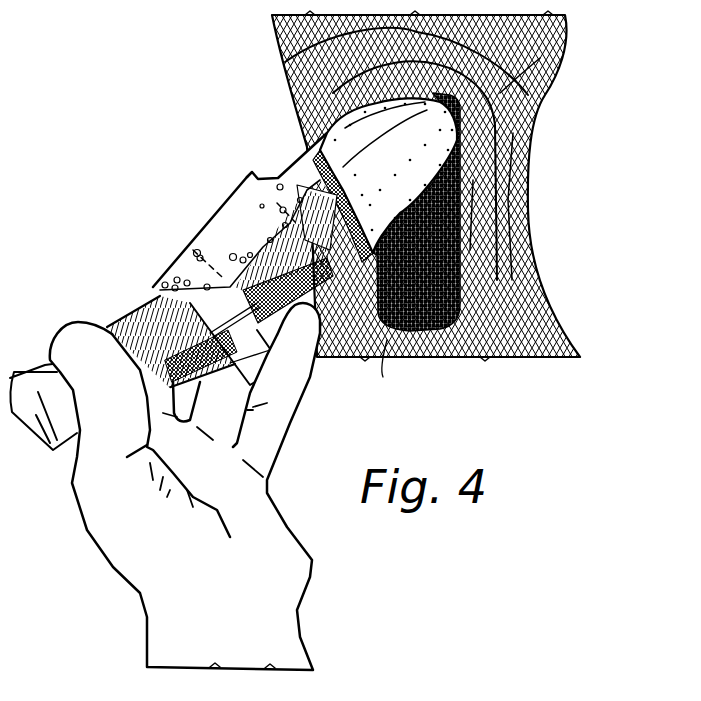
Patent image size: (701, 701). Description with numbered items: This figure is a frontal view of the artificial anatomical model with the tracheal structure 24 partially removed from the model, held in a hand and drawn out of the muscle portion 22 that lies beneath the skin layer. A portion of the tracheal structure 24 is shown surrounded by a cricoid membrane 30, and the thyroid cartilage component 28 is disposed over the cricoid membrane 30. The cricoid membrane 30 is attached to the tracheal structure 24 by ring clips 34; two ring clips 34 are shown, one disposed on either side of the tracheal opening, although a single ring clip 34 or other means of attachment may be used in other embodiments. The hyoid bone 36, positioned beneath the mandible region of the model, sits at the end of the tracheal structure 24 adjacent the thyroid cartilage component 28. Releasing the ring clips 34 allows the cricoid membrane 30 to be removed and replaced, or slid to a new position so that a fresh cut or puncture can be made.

The muscle portion 22 is at (540, 58).
The tracheal structure 24 is at (278, 178).
The thyroid cartilage component 28 is at (207, 242).
The cricoid membrane 30 is at (133, 310).
The ring clips 34 is at (280, 363).
The hyoid bone 36 is at (363, 97).